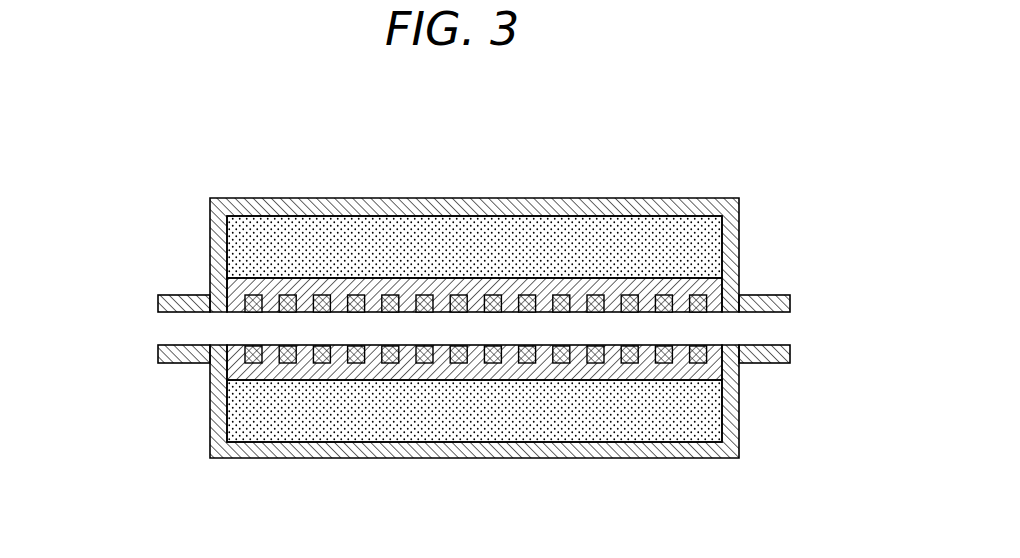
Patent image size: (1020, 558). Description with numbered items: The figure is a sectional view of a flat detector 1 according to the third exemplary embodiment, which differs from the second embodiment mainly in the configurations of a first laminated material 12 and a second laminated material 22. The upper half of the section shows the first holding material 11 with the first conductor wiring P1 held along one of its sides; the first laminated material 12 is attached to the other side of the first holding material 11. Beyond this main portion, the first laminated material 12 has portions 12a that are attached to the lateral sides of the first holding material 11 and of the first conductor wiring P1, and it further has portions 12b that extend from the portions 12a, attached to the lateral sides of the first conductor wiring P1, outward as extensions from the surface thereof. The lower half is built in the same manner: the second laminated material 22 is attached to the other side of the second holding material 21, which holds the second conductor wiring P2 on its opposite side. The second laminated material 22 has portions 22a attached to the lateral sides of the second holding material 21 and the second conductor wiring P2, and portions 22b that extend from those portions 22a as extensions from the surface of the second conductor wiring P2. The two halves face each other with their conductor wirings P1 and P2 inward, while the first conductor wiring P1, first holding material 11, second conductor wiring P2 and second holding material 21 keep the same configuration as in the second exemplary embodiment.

The flat detector 1 is at (179, 183).
The first holding material 11 is at (698, 247).
The first laminated material 12 is at (636, 207).
The portions of first laminated material 12a is at (733, 253).
The portions of first laminated material 12b is at (790, 300).
The first conductor wiring P1 is at (702, 306).
The second holding material 21 is at (697, 418).
The second laminated material 22 is at (628, 445).
The portions of second laminated material 22a is at (730, 410).
The portions of second laminated material 22b is at (790, 350).
The second conductor wiring P2 is at (708, 358).